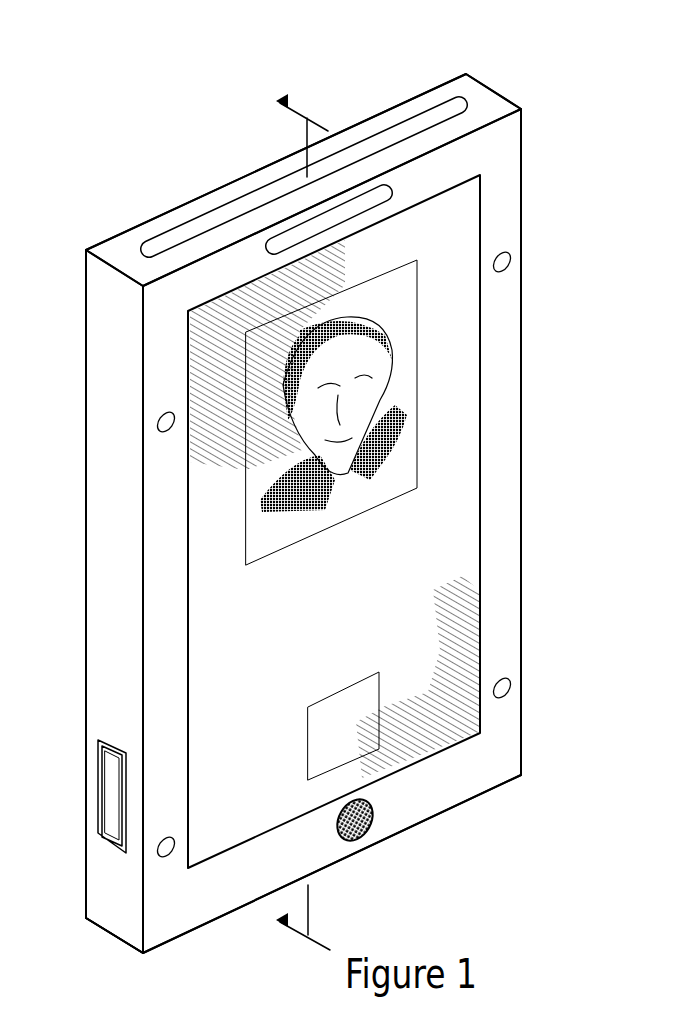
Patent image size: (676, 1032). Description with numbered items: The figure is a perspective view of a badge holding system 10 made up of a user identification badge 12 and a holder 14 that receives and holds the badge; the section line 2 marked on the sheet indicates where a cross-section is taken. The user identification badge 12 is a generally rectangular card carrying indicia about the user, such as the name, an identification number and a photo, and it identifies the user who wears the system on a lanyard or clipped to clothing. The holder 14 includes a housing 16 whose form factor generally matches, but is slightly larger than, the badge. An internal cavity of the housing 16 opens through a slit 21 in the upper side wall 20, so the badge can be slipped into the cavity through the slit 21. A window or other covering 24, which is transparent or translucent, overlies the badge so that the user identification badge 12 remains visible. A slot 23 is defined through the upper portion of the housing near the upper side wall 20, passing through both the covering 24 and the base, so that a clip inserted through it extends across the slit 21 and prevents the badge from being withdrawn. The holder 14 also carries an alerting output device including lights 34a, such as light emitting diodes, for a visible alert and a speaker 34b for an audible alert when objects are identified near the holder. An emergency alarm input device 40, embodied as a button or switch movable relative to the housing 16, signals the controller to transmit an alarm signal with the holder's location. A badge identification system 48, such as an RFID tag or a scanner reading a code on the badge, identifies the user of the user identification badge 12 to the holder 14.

The badge holding system 10 is at (531, 67).
The user identification badge 12 is at (452, 520).
The holder 14 is at (110, 532).
The housing 16 is at (163, 950).
The upper side wall 20 is at (398, 105).
The slit 21 is at (355, 157).
The slot 23 is at (382, 192).
The window or other covering 24 is at (480, 415).
The lights 34a is at (512, 262).
The speakers 34b is at (372, 823).
The emergency alarm input device 40 is at (110, 788).
The badge identification system 48 is at (363, 695).
The section line 2 is at (294, 516).